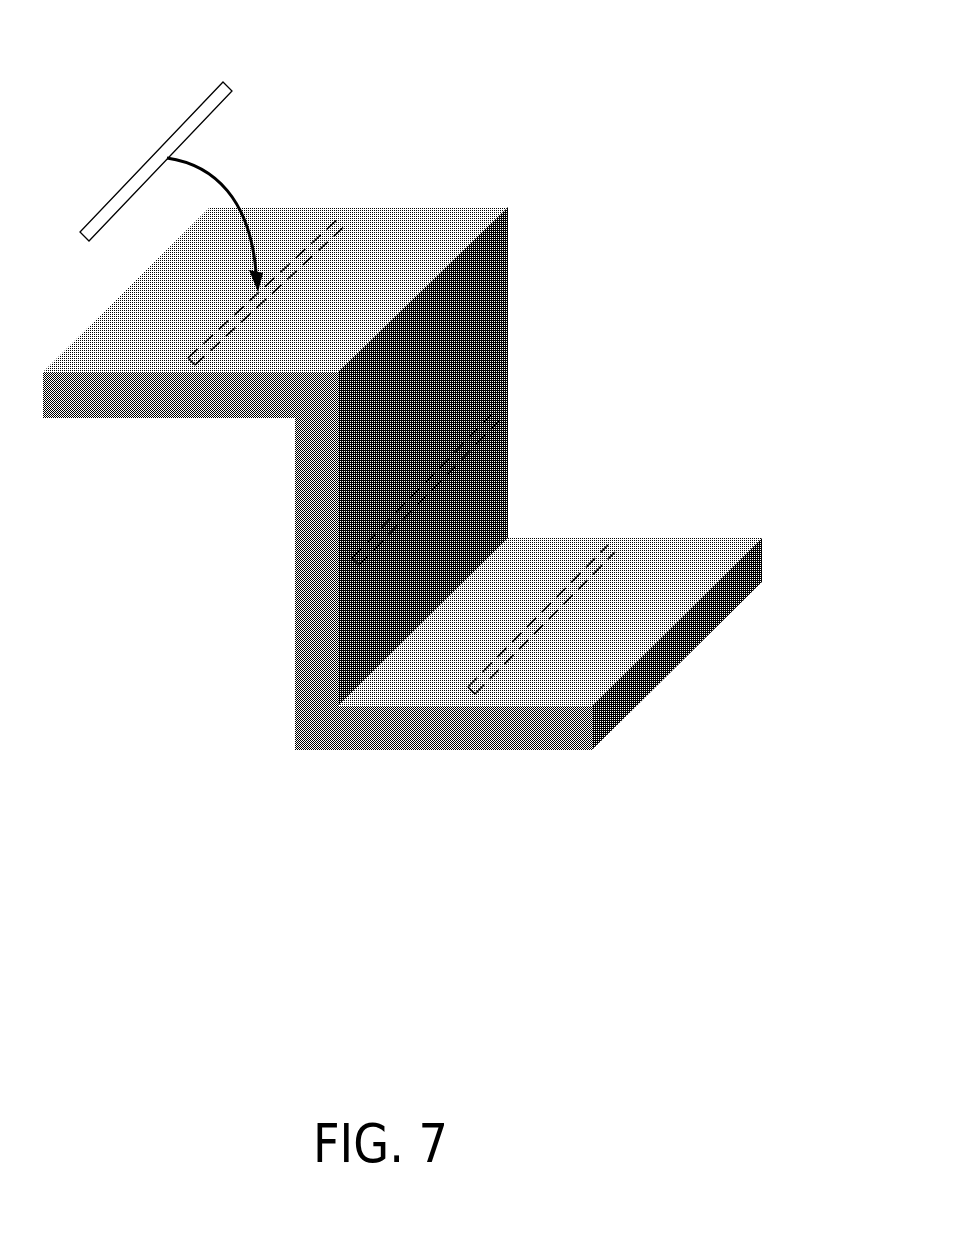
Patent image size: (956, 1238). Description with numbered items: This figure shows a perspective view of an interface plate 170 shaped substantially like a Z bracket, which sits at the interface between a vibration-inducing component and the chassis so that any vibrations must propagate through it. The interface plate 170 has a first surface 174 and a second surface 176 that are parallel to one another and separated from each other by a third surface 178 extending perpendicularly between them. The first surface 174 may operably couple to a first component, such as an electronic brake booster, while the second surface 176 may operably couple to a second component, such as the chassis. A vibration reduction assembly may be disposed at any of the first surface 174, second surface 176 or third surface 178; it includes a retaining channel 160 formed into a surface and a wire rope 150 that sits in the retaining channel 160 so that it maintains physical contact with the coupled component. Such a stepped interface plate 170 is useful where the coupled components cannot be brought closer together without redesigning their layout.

The wire rope 150 is at (171, 149).
The retaining channel 160 is at (440, 381).
The interface plate 170 is at (402, 561).
The first surface 174 is at (290, 245).
The second surface 176 is at (583, 620).
The third surface 178 is at (466, 456).